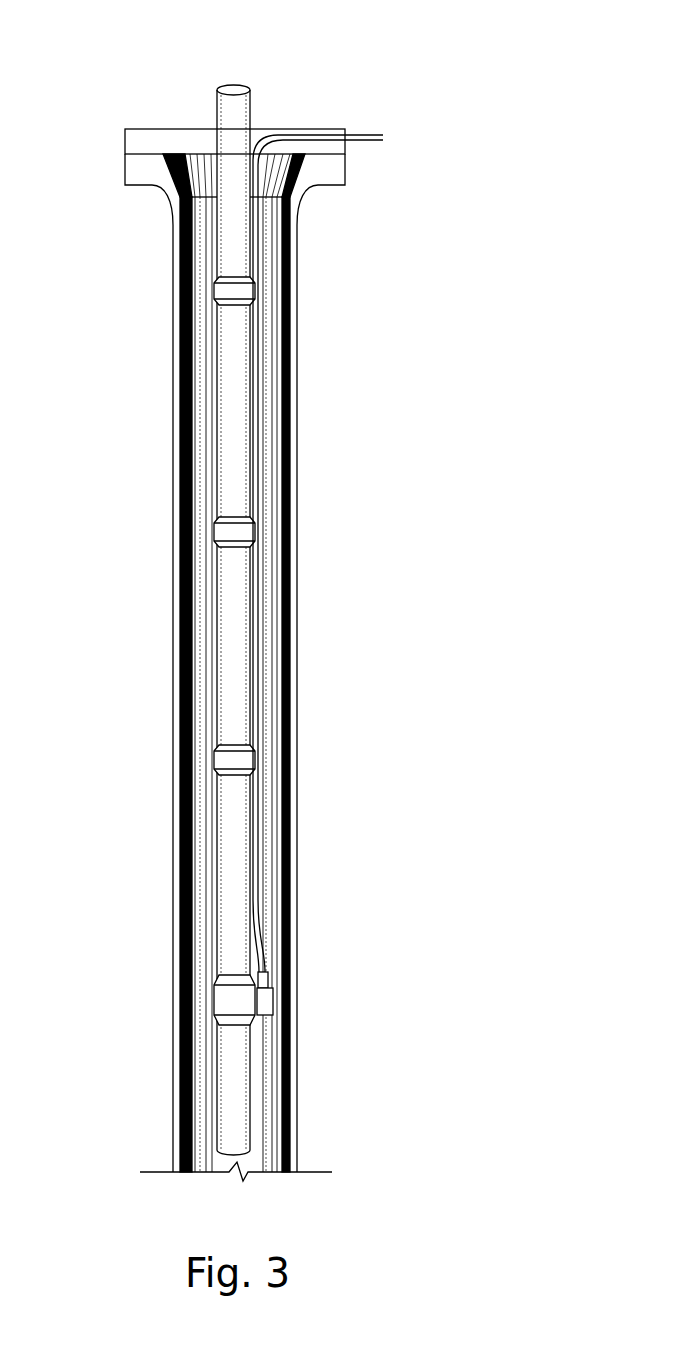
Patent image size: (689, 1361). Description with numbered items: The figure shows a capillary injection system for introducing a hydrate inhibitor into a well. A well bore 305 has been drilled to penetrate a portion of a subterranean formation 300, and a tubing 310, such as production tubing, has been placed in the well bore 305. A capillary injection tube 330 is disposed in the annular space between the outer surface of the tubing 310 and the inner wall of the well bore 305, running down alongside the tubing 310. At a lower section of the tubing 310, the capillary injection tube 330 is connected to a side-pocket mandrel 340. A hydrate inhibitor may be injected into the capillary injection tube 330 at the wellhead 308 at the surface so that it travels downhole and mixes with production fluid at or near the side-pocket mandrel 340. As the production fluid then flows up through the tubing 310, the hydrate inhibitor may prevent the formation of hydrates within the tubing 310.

The subterranean formation 300 is at (465, 55).
The well bore 305 is at (173, 363).
The wellhead 308 is at (213, 130).
The tubing 310 is at (238, 595).
The capillary injection tube 330 is at (257, 223).
The side-pocket mandrel 340 is at (270, 1002).